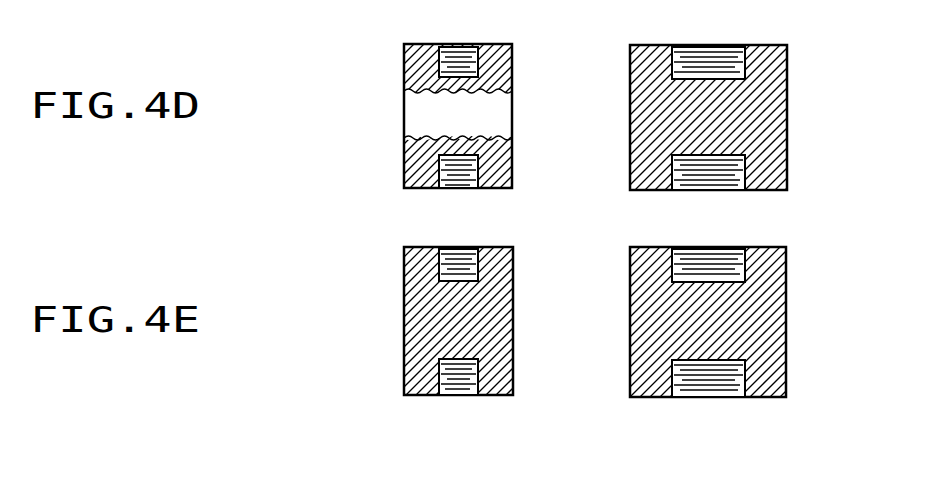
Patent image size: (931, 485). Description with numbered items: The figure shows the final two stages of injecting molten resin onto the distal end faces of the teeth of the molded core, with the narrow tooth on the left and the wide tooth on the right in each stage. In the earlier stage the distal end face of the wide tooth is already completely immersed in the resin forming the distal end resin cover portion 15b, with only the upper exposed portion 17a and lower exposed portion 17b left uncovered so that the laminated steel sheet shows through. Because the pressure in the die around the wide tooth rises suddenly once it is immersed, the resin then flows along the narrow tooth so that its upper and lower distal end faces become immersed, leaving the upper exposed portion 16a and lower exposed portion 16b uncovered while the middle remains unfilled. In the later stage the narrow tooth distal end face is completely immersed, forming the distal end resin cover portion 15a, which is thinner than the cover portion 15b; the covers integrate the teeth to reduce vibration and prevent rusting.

In FIG. 4E, the distal end resin cover portion 15a is at (497, 325).
In FIG. 4D, the distal end resin cover portion 15b is at (757, 118).
In FIG. 4E, the distal end resin cover portion 15b is at (773, 320).
In FIG. 4D, the upper exposed portion 16a is at (456, 56).
In FIG. 4E, the upper exposed portion 16a is at (457, 257).
In FIG. 4D, the lower exposed portion 16b is at (458, 183).
In FIG. 4E, the lower exposed portion 16b is at (455, 388).
In FIG. 4D, the upper exposed portion 17a is at (735, 62).
In FIG. 4E, the upper exposed portion 17a is at (716, 262).
In FIG. 4D, the lower exposed portion 17b is at (730, 178).